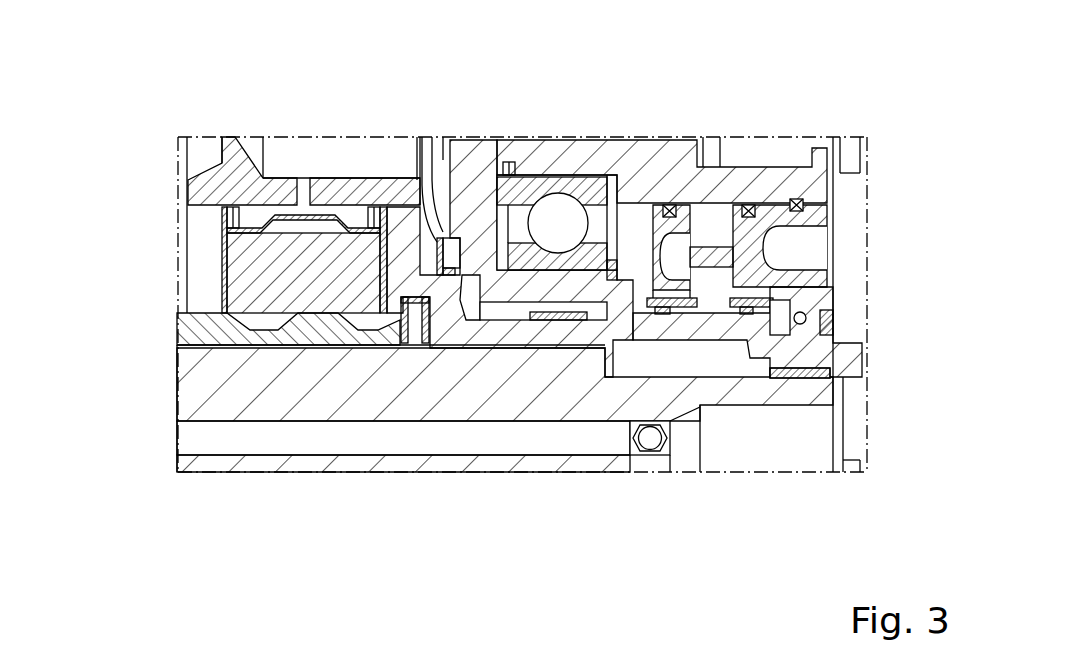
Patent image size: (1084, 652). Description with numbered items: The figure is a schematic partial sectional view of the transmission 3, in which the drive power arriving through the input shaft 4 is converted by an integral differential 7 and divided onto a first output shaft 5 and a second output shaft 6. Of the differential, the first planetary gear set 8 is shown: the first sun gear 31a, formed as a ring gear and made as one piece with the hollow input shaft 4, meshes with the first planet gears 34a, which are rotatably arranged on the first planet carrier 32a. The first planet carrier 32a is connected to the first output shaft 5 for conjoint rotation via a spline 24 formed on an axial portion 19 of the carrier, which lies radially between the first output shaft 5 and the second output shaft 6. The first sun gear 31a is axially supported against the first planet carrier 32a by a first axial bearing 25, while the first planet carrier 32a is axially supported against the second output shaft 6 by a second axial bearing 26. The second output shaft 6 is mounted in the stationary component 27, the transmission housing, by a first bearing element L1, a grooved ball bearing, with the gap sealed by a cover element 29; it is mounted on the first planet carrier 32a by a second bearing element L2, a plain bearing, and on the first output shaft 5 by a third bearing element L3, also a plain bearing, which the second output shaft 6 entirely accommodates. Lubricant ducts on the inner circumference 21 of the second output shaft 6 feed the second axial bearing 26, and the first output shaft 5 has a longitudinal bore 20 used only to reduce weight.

The transmission 3 is at (146, 116).
The integral differential 7 is at (165, 163).
The first planetary gear set 8 is at (165, 208).
The first planet gears 34a is at (260, 285).
The second axial bearing 26 is at (332, 131).
The first planet carrier 32a is at (408, 235).
The axial portion 19 is at (483, 333).
The first bearing element L1 is at (592, 168).
The stationary component 27 is at (667, 177).
The cover element 29 is at (767, 220).
The input shaft 4 is at (215, 355).
The first sun gear 31a is at (200, 327).
The first axial bearing 25 is at (413, 345).
The first output shaft 5 is at (317, 393).
The longitudinal bore 20 is at (228, 435).
The spline 24 is at (665, 477).
The second bearing element L2 is at (547, 323).
The inner circumference 21 is at (563, 313).
The second output shaft 6 is at (783, 347).
The third bearing element L3 is at (810, 383).